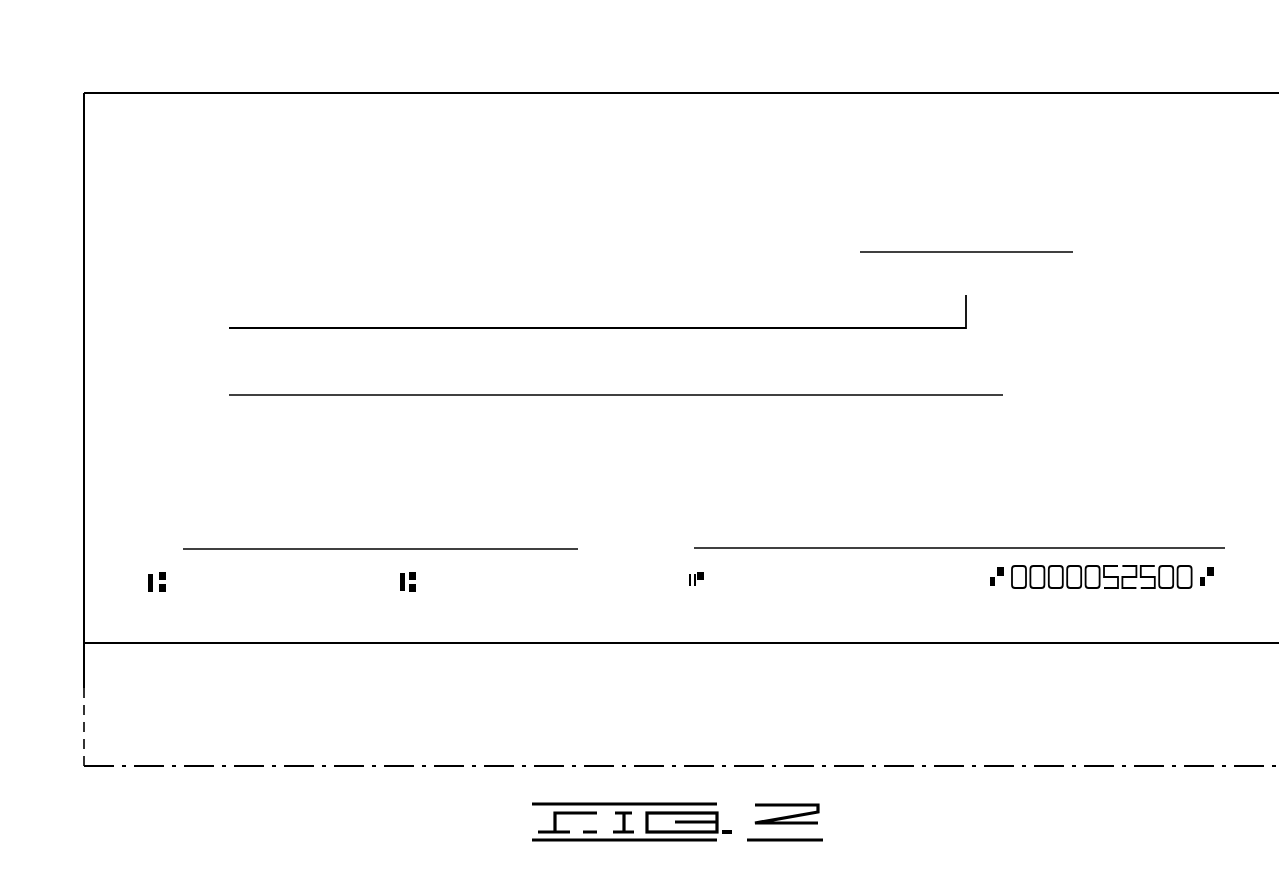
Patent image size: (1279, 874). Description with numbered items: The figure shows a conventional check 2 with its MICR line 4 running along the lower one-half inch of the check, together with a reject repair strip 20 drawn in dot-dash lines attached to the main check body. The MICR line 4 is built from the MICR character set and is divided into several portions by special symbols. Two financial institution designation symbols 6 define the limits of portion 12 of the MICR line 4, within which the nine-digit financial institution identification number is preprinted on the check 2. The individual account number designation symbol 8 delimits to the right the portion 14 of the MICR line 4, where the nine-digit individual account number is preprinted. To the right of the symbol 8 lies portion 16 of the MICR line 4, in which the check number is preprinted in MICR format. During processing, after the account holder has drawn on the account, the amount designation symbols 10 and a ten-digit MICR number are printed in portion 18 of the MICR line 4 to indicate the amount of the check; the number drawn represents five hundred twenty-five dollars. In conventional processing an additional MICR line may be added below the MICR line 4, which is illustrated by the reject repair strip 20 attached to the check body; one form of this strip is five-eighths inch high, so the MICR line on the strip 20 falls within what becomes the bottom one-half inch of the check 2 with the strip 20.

The check 2 is at (903, 68).
The MICR line 4 is at (134, 582).
The financial institution designation symbol 6 is at (153, 603).
The individual account number designation symbol 8 is at (695, 600).
The amount designation symbol 10 is at (1000, 598).
The portion of the MICR line 12 is at (254, 593).
The portion of the MICR line 14 is at (560, 585).
The portion of the MICR line 16 is at (886, 603).
The portion of the MICR line 18 is at (1097, 600).
The reject repair strip 20 is at (411, 728).